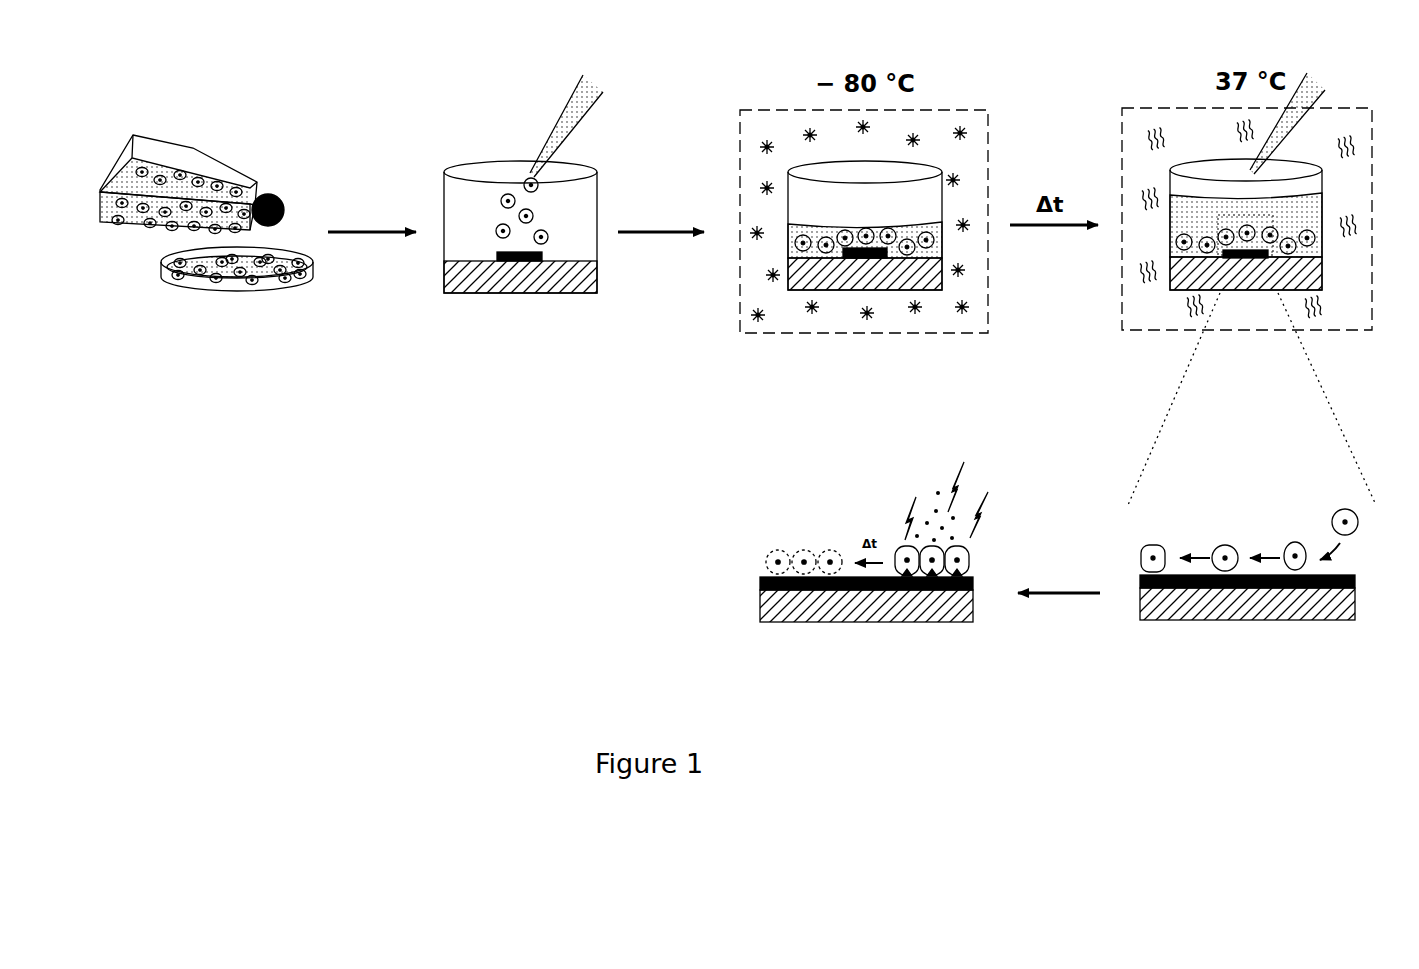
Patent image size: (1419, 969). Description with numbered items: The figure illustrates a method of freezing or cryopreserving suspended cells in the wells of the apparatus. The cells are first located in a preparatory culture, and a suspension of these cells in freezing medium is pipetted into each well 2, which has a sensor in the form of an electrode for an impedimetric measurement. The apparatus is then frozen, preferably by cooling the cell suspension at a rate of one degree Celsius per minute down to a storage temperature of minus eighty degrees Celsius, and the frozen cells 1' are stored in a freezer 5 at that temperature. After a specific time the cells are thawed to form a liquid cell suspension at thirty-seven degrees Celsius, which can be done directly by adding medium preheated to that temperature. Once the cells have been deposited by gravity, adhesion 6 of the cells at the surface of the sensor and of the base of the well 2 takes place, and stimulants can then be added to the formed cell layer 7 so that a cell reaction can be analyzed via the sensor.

The frozen cells 1' is at (861, 286).
The well 2 is at (442, 248).
The freezer 5 is at (896, 313).
The adhesion 6 is at (1302, 573).
The cell layer 7 is at (912, 594).